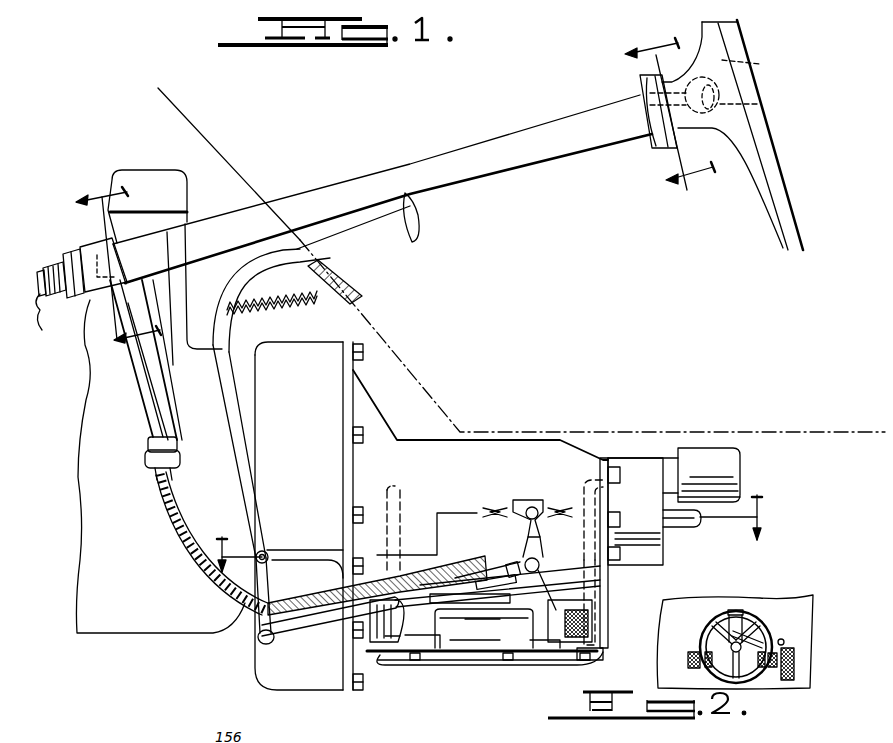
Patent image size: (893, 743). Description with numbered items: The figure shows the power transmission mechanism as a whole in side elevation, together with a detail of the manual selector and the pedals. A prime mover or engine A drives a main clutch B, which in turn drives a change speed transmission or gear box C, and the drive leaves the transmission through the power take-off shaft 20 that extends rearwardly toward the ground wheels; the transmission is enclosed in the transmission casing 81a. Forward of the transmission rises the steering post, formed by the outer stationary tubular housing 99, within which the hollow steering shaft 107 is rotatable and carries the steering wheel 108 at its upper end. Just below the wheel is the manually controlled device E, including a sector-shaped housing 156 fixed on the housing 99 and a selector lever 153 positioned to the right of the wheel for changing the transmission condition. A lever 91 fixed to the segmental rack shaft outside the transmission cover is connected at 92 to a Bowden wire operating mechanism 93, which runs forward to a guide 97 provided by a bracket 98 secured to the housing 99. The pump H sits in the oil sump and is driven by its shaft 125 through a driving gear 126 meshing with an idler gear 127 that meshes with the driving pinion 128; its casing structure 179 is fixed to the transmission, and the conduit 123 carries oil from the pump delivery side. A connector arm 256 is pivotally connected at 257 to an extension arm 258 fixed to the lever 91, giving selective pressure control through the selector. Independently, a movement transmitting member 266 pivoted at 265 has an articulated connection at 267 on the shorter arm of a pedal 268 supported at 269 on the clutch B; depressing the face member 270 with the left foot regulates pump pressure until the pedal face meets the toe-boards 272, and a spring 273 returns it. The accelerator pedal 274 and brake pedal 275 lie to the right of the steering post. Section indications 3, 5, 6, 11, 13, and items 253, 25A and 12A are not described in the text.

In FIG. 1, the outer stationary tubular housing 99 is at (197, 220).
In FIG. 2, the outer stationary tubular housing 99 is at (738, 610).
In FIG. 1, the prime mover or engine A is at (165, 180).
In FIG. 1, the section line 5- 5 is at (102, 278).
In FIG. 1, the hollow steering shaft 107 is at (76, 322).
In FIG. 1, the bracket 98 is at (168, 372).
In FIG. 1, the guide 97 is at (150, 462).
In FIG. 1, the pedal 268 is at (243, 487).
In FIG. 1, the pivot 269 is at (270, 553).
In FIG. 1, the articulated connection 267 is at (258, 638).
In FIG. 1, the movement transmitting member 266 is at (266, 640).
In FIG. 1, the section line 6- 6 is at (499, 545).
In FIG. 1, the main clutch B is at (330, 386).
In FIG. 1, the change speed transmission or gear box C is at (396, 438).
In FIG. 1, the spring 273 is at (265, 312).
In FIG. 1, the toe-boards 272 is at (355, 296).
In FIG. 1, the face member of the pedal 270 is at (420, 211).
In FIG. 2, the face member of the pedal 270 is at (688, 660).
In FIG. 1, the driving pinion 128 is at (398, 492).
In FIG. 1, the idler gear 127 is at (409, 562).
In FIG. 1, the lever 91 is at (513, 535).
In FIG. 1, the connection 92 is at (540, 560).
In FIG. 1, the pivotal connection 265 is at (455, 580).
In FIG. 1, the Bowden wire operating mechanism 93 is at (405, 588).
In FIG. 1, the inner housing 13 is at (484, 628).
In FIG. 1, the plate 253 is at (493, 587).
In FIG. 1, the connector arm 256 is at (470, 598).
In FIG. 1, the extension arm 258 is at (516, 578).
In FIG. 1, the pivotal connection 257 is at (568, 588).
In FIG. 1, the plate 25A is at (482, 628).
In FIG. 1, the section line 11- 11 is at (400, 590).
In FIG. 1, the conduit 123 is at (592, 618).
In FIG. 1, the base plate 12A is at (482, 668).
In FIG. 1, the casing structure 179 is at (512, 668).
In FIG. 1, the swash plate type pump H is at (455, 668).
In FIG. 1, the pump drive shaft 125 is at (412, 668).
In FIG. 1, the driving gear 126 is at (390, 664).
In FIG. 1, the transmission casing 81a is at (573, 463).
In FIG. 1, the power take-off shaft 20 is at (677, 519).
In FIG. 1, the housing 156 is at (648, 150).
In FIG. 2, the housing 156 is at (762, 633).
In FIG. 1, the manually controlled device E is at (637, 82).
In FIG. 1, the section line 3- 3 is at (657, 117).
In FIG. 1, the steering wheel 108 is at (757, 106).
In FIG. 2, the steering wheel 108 is at (706, 622).
In FIG. 1, the selector lever 153 is at (755, 67).
In FIG. 2, the selector lever 153 is at (782, 639).
In FIG. 2, the accelerator pedal 274 is at (788, 680).
In FIG. 2, the brake pedal 275 is at (770, 680).